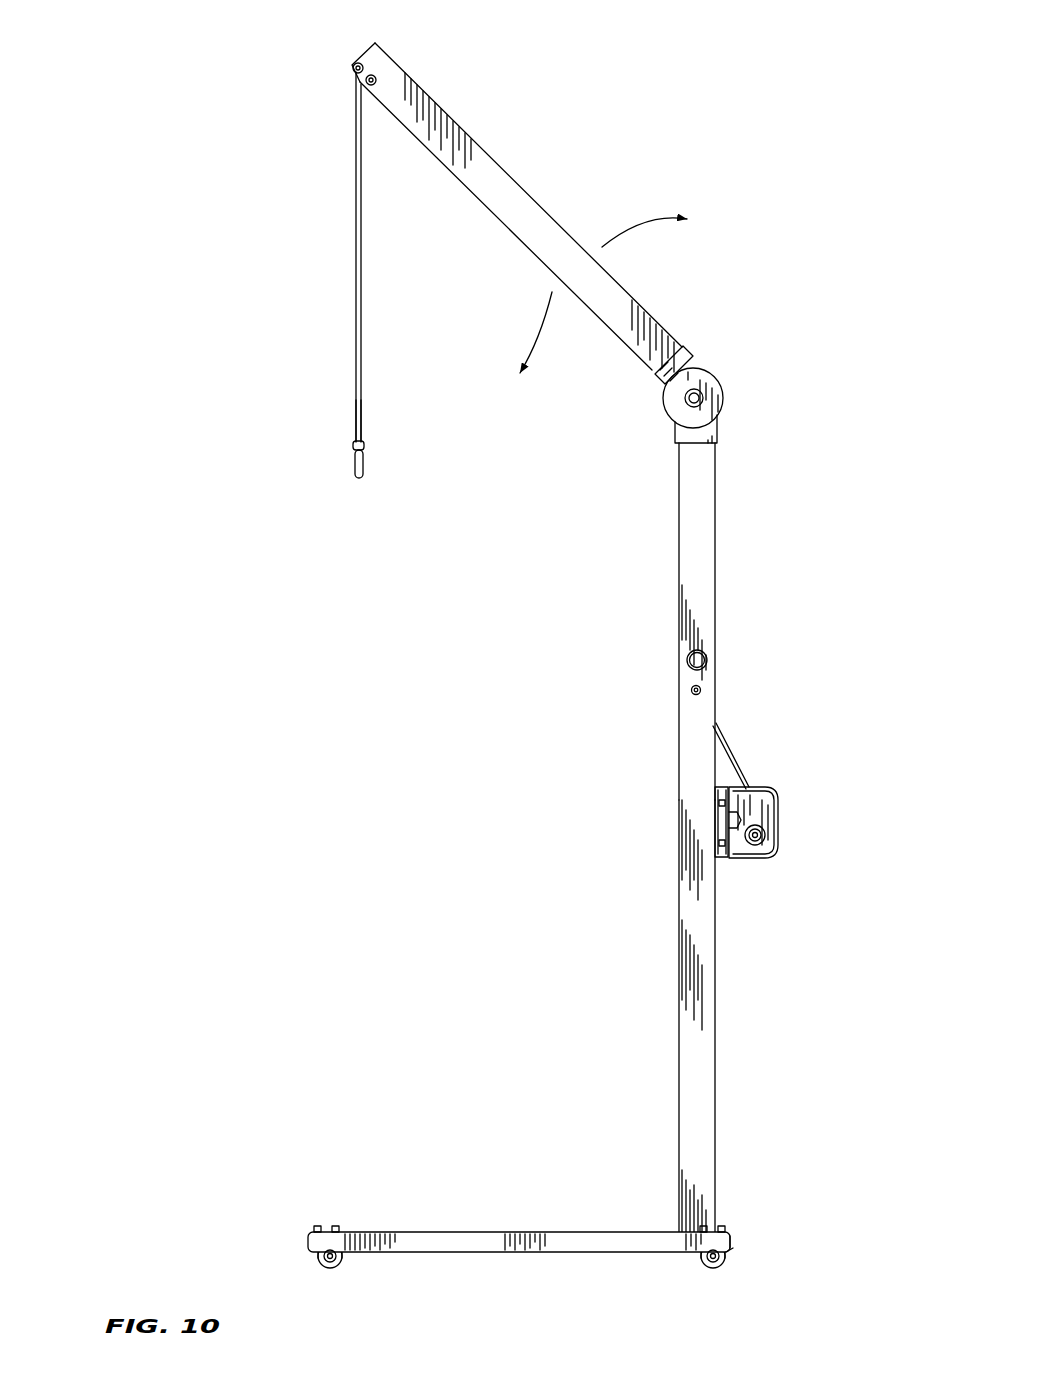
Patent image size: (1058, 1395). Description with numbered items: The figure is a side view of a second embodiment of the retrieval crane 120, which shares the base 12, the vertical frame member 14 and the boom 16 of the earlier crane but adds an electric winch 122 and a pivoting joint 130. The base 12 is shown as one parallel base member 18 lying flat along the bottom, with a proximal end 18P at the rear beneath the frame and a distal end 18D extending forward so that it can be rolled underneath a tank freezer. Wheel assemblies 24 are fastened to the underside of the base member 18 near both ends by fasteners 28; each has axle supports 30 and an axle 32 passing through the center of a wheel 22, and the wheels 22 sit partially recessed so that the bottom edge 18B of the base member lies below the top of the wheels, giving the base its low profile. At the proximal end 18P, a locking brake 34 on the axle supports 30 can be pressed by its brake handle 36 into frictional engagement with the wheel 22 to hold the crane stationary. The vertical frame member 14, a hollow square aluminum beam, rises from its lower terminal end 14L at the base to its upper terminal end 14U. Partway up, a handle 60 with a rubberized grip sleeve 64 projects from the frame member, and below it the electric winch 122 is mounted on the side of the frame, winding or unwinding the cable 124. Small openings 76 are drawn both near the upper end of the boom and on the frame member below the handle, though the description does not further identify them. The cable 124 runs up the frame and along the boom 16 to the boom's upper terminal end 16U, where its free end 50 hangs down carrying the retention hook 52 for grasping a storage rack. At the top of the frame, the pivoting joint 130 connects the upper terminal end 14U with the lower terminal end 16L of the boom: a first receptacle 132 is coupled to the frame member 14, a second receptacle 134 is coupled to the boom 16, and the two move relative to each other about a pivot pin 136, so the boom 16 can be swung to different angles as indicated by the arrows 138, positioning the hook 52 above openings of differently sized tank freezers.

The base 12 is at (438, 1213).
The vertical frame member 14 is at (694, 837).
The upper terminal end 14U is at (710, 475).
The lower terminal end 14L is at (681, 1210).
The boom 16 is at (509, 191).
The upper terminal end 16U is at (375, 43).
The lower terminal end 16L is at (660, 331).
The parallel base member 18 is at (515, 1243).
The distal end 18D is at (308, 1240).
The bottom edge 18B is at (511, 1253).
The proximal end 18P is at (732, 1242).
The wheel 22 is at (330, 1268).
The wheel assembly 24 is at (340, 1267).
The fastener 28 is at (336, 1226).
The axle support 30 is at (340, 1253).
The axle 32 is at (326, 1259).
The locking brake 34 is at (733, 1248).
The brake handle 36 is at (732, 1242).
The free end 50 is at (355, 430).
The retention hook 52 is at (365, 472).
The handle 60 is at (725, 638).
The rubberized grip sleeve 64 is at (708, 658).
The pulley pin 76 is at (376, 79).
The retrieval crane 120 is at (627, 170).
The electric winch 122 is at (771, 784).
The cable 124 is at (356, 248).
The pivoting joint 130 is at (718, 372).
The first receptacle 132 is at (720, 433).
The second receptacle 134 is at (657, 387).
The pivot pin 136 is at (690, 402).
The arrows 138 is at (625, 237).